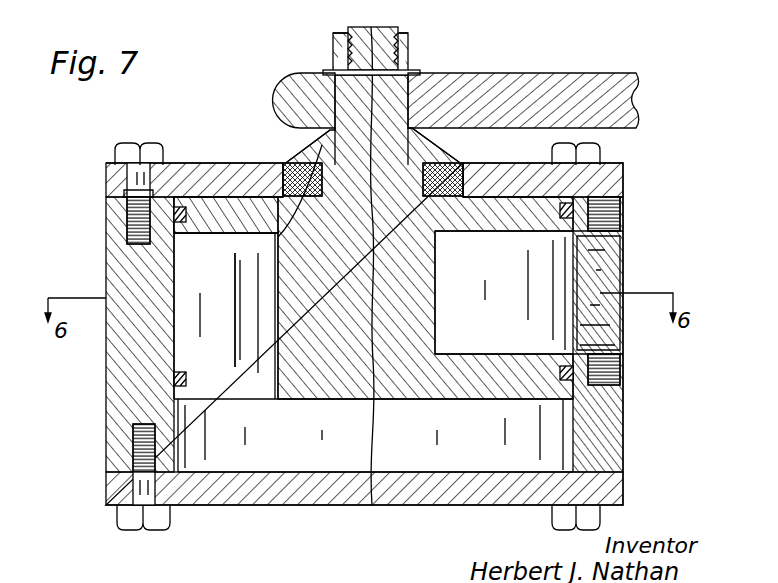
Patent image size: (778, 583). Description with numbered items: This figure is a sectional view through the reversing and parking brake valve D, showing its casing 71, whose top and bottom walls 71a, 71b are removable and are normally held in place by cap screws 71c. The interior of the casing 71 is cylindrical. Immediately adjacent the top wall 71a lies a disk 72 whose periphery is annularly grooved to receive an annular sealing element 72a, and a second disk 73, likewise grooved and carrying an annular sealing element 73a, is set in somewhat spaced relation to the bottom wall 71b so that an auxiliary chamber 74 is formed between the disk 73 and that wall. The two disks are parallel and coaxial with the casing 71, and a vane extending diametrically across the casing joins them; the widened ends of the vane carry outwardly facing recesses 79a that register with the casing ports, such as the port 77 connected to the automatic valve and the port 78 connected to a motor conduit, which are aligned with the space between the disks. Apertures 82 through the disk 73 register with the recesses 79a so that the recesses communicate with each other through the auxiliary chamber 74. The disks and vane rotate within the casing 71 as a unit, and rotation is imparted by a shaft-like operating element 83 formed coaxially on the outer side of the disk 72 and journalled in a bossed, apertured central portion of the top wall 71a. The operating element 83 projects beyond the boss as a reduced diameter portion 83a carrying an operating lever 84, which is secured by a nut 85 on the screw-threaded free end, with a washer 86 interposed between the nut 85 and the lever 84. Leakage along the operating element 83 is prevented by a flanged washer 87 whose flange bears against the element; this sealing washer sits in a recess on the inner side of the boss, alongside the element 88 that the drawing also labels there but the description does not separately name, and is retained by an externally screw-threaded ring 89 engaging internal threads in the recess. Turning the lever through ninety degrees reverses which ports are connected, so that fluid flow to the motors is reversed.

The casing 71 is at (128, 378).
The top wall 71a is at (113, 183).
The bottom wall 71b is at (280, 158).
The cap screws 71c is at (127, 153).
The disk 72 is at (500, 218).
The annular sealing element 72a is at (185, 225).
The disk 73 is at (500, 383).
The annular sealing element 73a is at (188, 383).
The auxiliary chamber 74 is at (328, 455).
The port 77 is at (612, 265).
The port 78 is at (373, 253).
The outwardly facing recesses 79a is at (192, 287).
The apertures 82 is at (233, 382).
The shaft-like operating element 83 is at (335, 148).
The reduced diameter portion 83a is at (347, 103).
The operating lever 84 is at (605, 88).
The nut 85 is at (410, 45).
The washer 86 is at (420, 72).
The flanged washer 87 is at (452, 168).
The sleeve 88 is at (276, 237).
The externally screw-threaded ring 89 is at (290, 178).
The reversing and parking brake valve D is at (623, 173).